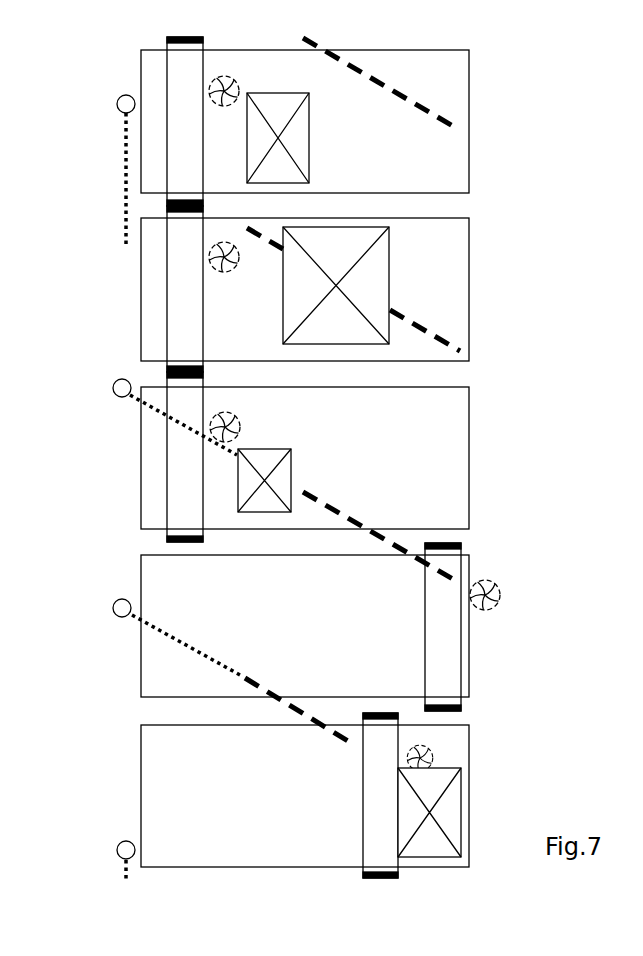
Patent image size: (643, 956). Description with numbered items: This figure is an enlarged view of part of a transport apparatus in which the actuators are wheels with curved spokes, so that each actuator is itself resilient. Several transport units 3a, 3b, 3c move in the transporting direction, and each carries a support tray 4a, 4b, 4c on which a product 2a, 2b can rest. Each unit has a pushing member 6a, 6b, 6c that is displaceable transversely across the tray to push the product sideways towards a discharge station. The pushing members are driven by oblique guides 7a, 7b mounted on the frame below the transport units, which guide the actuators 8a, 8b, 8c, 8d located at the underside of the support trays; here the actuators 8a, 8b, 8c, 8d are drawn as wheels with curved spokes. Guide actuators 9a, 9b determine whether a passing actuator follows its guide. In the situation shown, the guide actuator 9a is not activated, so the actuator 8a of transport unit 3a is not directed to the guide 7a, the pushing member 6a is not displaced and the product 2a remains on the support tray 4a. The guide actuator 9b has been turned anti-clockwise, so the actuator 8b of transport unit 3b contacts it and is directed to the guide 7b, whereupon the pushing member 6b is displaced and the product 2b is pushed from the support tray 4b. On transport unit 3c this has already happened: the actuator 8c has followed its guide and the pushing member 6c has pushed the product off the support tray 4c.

The product 2a is at (382, 253).
The product 2b is at (283, 477).
The transport unit 3a is at (299, 289).
The transport unit 3b is at (299, 477).
The transport unit 3c is at (299, 636).
The support tray 4a is at (458, 292).
The support tray 4b is at (462, 421).
The support tray 4c is at (408, 635).
The pushing member 6a is at (150, 333).
The pushing member 6b is at (180, 493).
The pushing member 6c is at (452, 660).
The guide 7a is at (420, 327).
The guide 7b is at (365, 527).
The actuator 8a is at (203, 258).
The actuator 8b is at (207, 425).
The actuator 8c is at (490, 582).
The actuator 8d is at (209, 84).
The guide actuator 9a is at (126, 146).
The guide actuator 9b is at (158, 407).